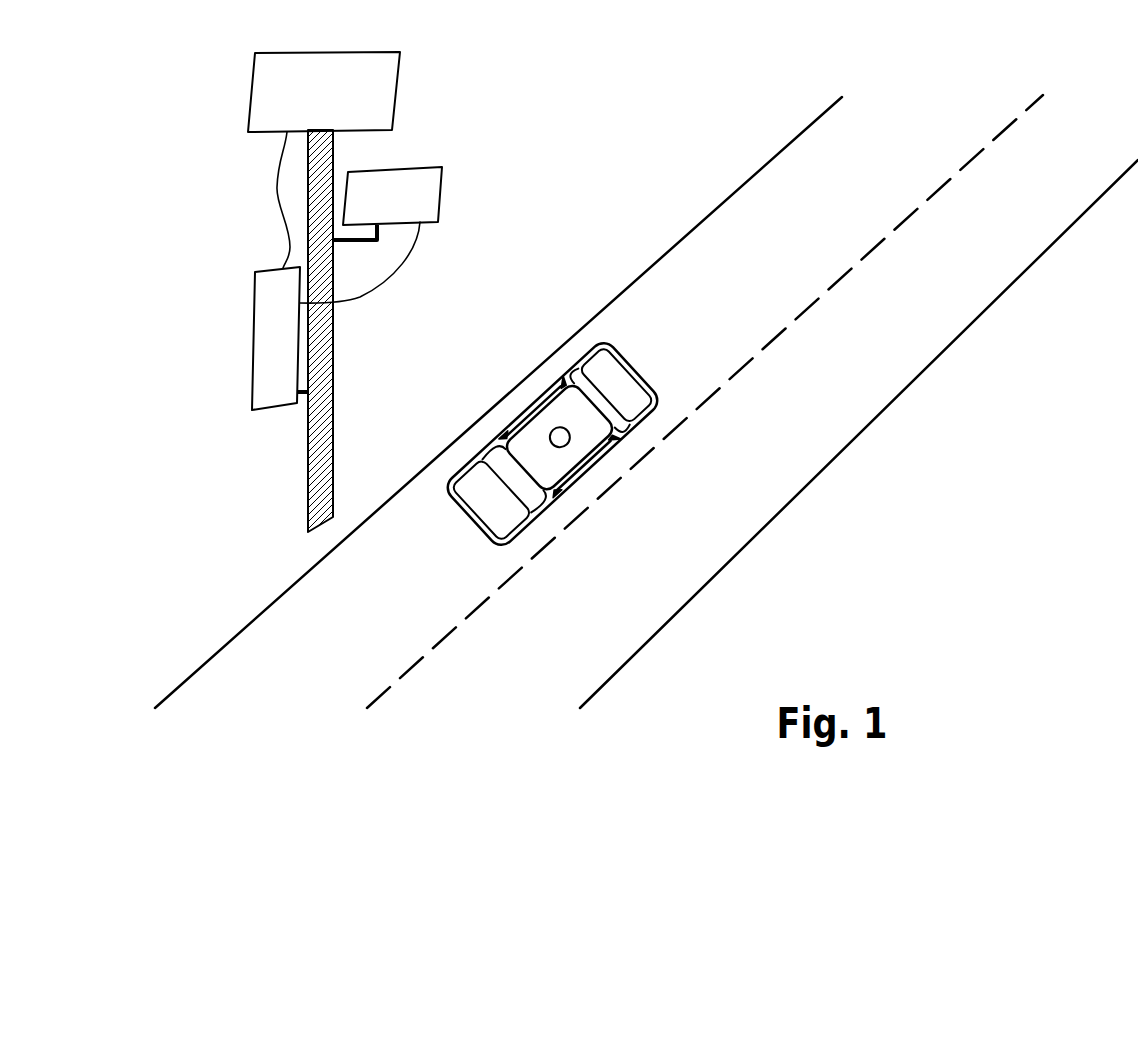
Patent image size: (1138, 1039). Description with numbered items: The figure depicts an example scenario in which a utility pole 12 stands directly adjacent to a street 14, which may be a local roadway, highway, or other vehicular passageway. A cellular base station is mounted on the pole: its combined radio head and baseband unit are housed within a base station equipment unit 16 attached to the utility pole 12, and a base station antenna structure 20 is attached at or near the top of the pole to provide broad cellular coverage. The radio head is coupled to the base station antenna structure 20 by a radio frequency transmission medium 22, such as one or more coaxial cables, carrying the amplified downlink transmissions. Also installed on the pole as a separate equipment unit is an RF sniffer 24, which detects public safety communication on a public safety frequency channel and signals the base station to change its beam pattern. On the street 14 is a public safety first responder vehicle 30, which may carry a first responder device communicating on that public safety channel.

The utility pole 12 is at (333, 450).
The street 14 is at (635, 655).
The base station equipment unit 16 is at (253, 364).
The base station antenna structure 20 is at (252, 90).
The radio frequency transmission medium 22 is at (277, 192).
The RF sniffer 24 is at (400, 168).
The public safety first responder vehicle 30 is at (637, 360).